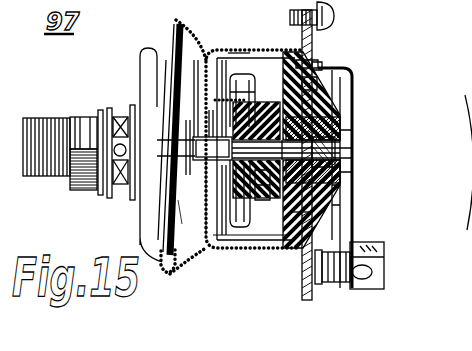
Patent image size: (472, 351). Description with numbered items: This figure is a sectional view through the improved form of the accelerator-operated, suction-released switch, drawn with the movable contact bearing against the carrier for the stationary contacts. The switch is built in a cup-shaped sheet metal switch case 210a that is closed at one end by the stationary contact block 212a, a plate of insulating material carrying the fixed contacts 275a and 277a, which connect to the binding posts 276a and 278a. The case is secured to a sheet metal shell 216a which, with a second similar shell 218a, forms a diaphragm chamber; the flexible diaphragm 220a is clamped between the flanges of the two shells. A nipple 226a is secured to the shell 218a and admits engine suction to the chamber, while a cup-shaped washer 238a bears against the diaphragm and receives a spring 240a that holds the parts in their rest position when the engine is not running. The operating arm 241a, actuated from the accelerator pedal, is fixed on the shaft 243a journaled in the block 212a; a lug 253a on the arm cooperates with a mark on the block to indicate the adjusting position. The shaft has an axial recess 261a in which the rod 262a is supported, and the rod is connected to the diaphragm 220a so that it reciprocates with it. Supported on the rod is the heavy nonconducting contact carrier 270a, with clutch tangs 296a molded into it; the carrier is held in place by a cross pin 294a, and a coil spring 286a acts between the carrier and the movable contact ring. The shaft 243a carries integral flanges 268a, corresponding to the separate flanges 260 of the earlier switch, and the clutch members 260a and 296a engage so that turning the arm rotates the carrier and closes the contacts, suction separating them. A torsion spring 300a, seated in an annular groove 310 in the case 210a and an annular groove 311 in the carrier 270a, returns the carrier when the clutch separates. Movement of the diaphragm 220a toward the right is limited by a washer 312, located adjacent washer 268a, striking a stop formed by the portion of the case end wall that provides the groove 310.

The shell 218a is at (158, 47).
The sheet metal shell 216a is at (184, 105).
The spring 240a is at (143, 118).
The washer 268a is at (205, 63).
The washer 312 is at (239, 48).
The coil spring 286a is at (267, 100).
The annular groove 311 is at (243, 94).
The binding post 276a is at (320, 20).
The fixed contact 275a is at (300, 70).
The lug 253a is at (318, 72).
The clutch member 260a is at (355, 82).
The clutch tangs 296a is at (348, 110).
The rod 262a is at (340, 132).
The axial recess 261a is at (352, 142).
The shaft 243a is at (354, 157).
The operating arm 241a is at (312, 200).
The fixed contact 277a is at (305, 218).
The cross pin 294a is at (266, 152).
The annular groove 310 is at (191, 212).
The nipple 226a is at (110, 190).
The cup-shaped washer 238a is at (180, 160).
The diaphragm 220a is at (176, 237).
The spring 300a is at (161, 252).
The contact carrier 270a is at (232, 250).
The flanges 260 is at (254, 248).
The switch case 210a is at (270, 250).
The stationary contact block 212a is at (300, 257).
The binding post 278a is at (308, 296).